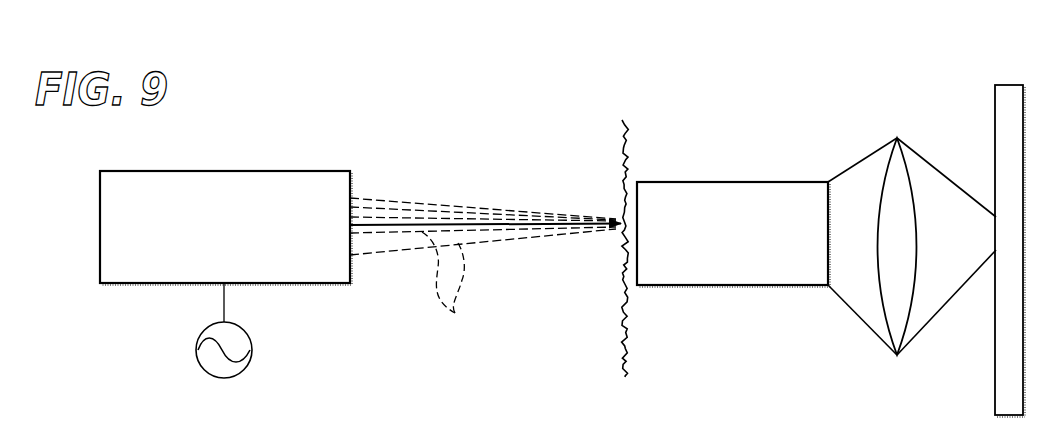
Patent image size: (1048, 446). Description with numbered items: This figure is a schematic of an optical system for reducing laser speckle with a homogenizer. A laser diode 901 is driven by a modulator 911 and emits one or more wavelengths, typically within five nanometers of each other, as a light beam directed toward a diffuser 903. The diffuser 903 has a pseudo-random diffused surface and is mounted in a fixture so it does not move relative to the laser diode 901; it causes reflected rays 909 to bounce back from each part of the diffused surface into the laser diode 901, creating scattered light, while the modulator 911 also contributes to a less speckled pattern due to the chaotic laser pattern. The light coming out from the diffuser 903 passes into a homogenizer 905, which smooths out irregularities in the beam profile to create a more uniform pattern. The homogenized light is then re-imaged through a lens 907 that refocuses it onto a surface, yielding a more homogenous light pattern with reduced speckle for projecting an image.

The laser diode 901 is at (242, 268).
The diffuser 903 is at (603, 117).
The homogenizer 905 is at (748, 262).
The lens 907 is at (877, 360).
The reflected rays 909 is at (992, 202).
The modulator 911 is at (195, 350).